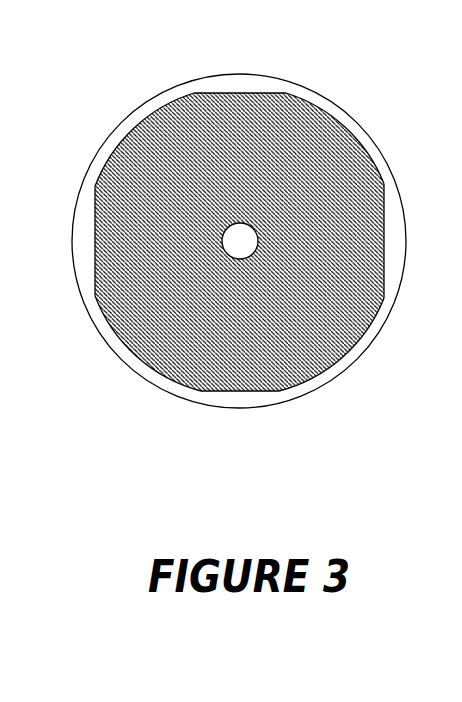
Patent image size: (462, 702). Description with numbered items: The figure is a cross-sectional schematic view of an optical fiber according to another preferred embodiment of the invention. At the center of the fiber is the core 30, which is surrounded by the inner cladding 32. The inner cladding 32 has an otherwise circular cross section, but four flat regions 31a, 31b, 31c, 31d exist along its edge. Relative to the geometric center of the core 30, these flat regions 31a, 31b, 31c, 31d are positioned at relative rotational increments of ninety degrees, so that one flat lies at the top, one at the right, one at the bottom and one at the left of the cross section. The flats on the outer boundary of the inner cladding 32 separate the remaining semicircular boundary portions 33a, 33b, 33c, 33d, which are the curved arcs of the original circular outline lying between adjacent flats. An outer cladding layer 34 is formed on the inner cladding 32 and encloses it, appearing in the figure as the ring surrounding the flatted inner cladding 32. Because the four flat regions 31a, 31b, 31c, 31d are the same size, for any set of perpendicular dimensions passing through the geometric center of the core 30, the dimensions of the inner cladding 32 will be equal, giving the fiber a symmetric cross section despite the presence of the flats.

The core 30 is at (242, 240).
The flat region 31a is at (403, 232).
The flat region 31b is at (258, 388).
The flat region 31c is at (95, 255).
The flat region 31d is at (238, 92).
The inner cladding 32 is at (376, 298).
The semicircular boundary portion 33a is at (337, 123).
The semicircular boundary portion 33b is at (357, 343).
The semicircular boundary portion 33c is at (123, 343).
The semicircular boundary portion 33d is at (140, 127).
The outer cladding layer 34 is at (173, 380).